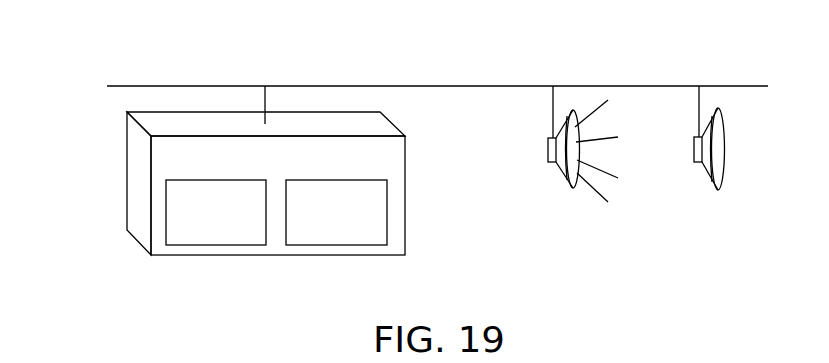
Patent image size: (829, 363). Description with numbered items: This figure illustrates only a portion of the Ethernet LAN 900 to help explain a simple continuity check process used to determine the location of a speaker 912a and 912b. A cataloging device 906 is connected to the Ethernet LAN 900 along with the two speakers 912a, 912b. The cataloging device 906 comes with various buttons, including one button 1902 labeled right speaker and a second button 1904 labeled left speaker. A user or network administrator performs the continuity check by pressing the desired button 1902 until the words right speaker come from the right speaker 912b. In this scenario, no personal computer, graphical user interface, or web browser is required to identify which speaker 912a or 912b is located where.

The Ethernet LAN 900 is at (172, 53).
The cataloging device 906 is at (405, 188).
The second button 1904 is at (217, 178).
The button 1902 is at (337, 178).
The speaker 912a is at (548, 148).
The right speaker 912b is at (694, 150).